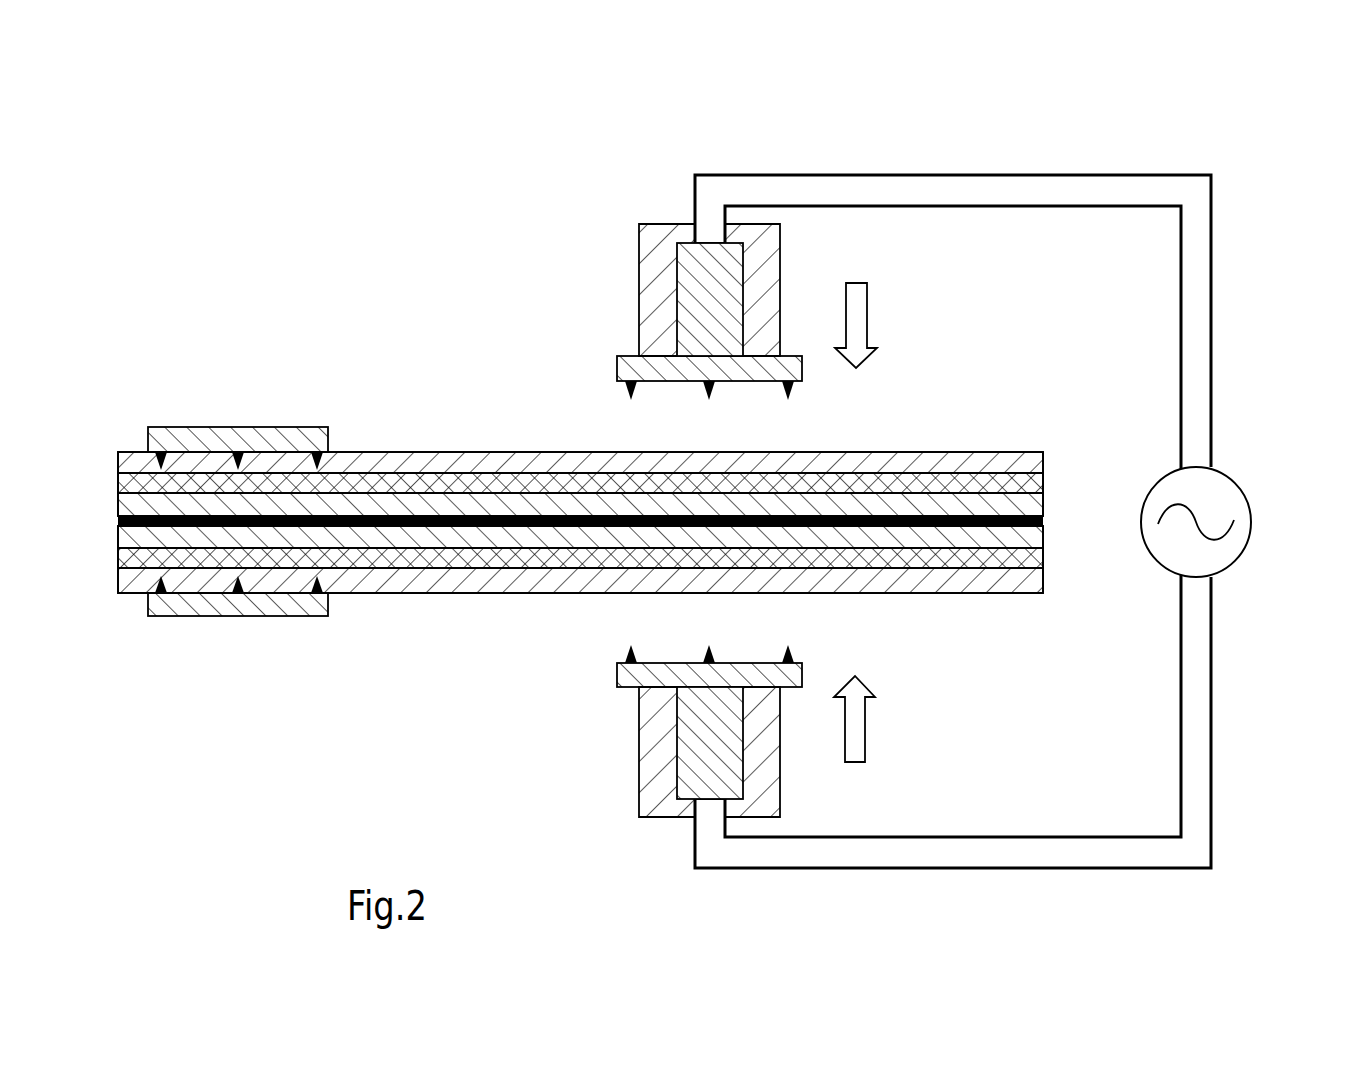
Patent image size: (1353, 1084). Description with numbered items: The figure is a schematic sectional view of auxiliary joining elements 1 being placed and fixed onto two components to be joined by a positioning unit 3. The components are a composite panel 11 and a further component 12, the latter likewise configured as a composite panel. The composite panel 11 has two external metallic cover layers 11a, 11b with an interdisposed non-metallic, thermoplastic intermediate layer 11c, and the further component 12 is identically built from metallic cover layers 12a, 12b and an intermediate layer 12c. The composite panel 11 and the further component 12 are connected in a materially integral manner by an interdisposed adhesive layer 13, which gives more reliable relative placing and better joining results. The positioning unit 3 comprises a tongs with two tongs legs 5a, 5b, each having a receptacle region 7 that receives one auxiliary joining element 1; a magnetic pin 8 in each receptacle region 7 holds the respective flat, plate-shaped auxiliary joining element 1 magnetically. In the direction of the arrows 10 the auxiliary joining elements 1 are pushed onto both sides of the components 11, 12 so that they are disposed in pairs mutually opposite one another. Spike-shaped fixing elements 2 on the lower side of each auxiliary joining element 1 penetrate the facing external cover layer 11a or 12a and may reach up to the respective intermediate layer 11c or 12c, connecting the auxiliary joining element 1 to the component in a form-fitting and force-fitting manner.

The auxiliary joining element 1 is at (283, 440).
The fixing element 2 is at (633, 390).
The positioning unit 3 is at (1292, 141).
The tongs leg 5a is at (972, 185).
The tongs leg 5b is at (955, 855).
The receptacle region 7 is at (655, 520).
The magnetic pin 8 is at (697, 300).
The arrow 10 is at (857, 322).
The composite panel 11 is at (427, 420).
The metallic cover layer 11a is at (133, 462).
The metallic cover layer 11b is at (133, 505).
The intermediate layer 11c is at (136, 483).
The further component 12 is at (425, 625).
The metallic cover layer 12a is at (133, 580).
The metallic cover layer 12b is at (140, 535).
The intermediate layer 12c is at (137, 556).
The adhesive layer 13 is at (118, 521).